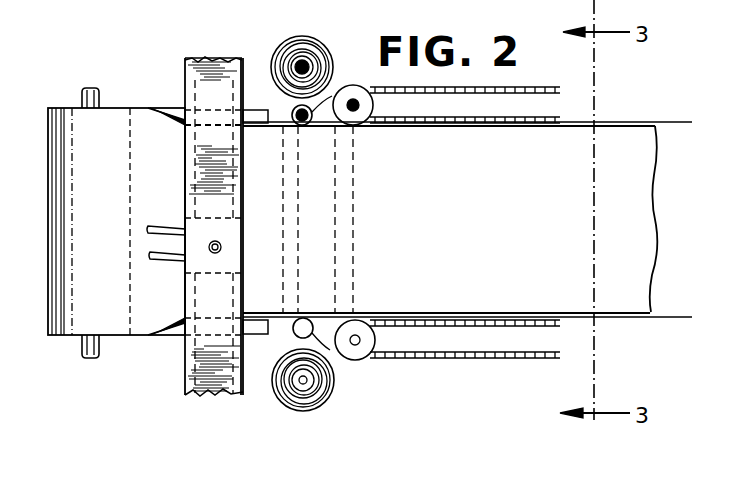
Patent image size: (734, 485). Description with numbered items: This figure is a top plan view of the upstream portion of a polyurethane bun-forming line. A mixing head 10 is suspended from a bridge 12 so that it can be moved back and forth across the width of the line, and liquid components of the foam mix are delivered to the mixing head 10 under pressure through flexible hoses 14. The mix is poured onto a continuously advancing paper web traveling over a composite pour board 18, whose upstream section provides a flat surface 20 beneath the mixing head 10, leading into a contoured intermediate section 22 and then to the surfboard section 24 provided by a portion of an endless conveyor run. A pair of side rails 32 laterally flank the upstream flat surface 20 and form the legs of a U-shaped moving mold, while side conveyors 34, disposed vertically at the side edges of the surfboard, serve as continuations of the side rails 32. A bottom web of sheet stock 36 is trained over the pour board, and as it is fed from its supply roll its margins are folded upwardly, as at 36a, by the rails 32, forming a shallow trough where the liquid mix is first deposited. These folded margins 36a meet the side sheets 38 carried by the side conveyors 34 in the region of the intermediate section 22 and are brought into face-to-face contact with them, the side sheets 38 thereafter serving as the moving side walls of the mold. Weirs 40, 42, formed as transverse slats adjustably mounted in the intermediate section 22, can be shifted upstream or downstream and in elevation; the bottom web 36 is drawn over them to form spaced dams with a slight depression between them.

The mixing head 10 is at (213, 215).
The bridge 12 is at (200, 80).
The flexible hoses 14 is at (150, 255).
The composite pour board 18 is at (116, 70).
The flat surface 20 is at (172, 188).
The contoured intermediate section 22 is at (278, 262).
The surfboard section 24 is at (421, 254).
The side rails 32 is at (175, 108).
The side conveyors 34 is at (522, 87).
The sheet stock 36 is at (77, 138).
The folded margins 36a is at (167, 114).
The side sheets 38 is at (285, 54).
The weir 40 is at (287, 196).
The weir 42 is at (355, 196).